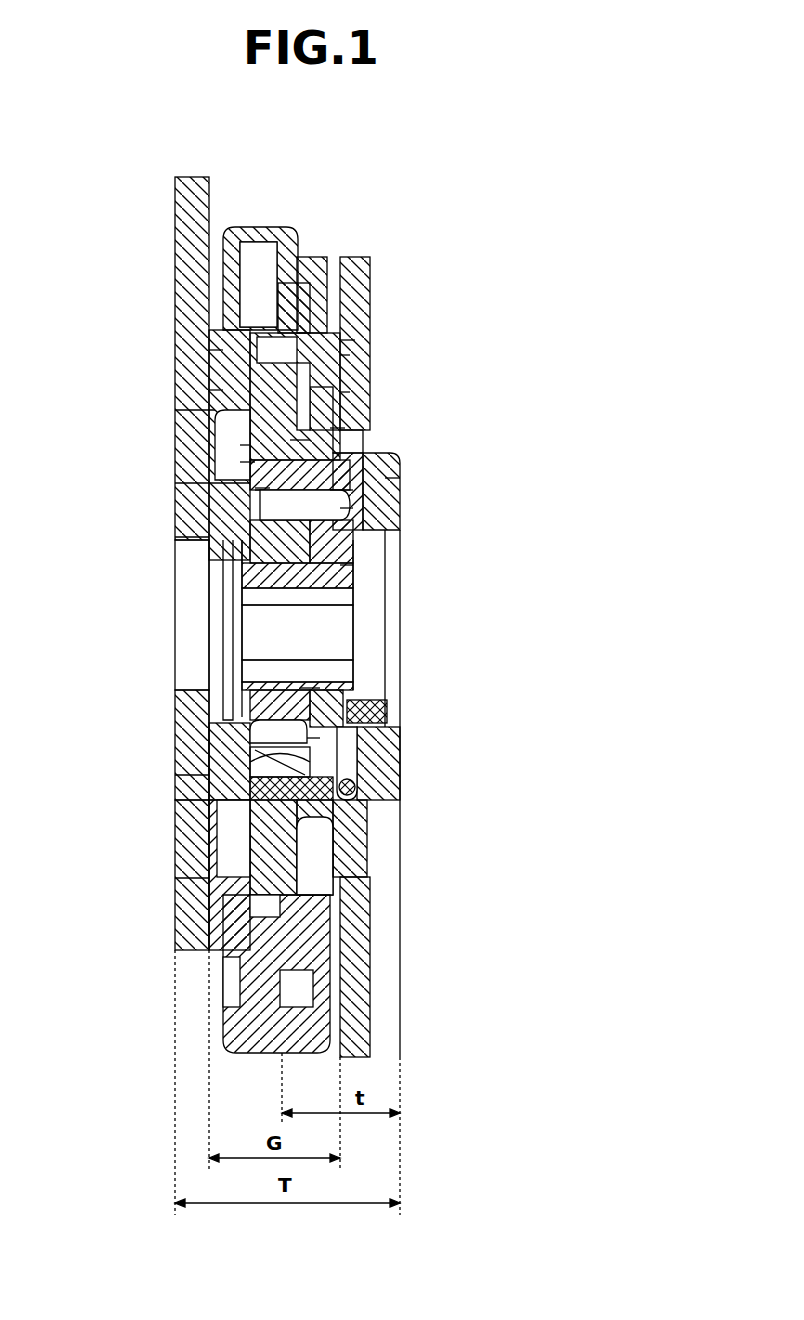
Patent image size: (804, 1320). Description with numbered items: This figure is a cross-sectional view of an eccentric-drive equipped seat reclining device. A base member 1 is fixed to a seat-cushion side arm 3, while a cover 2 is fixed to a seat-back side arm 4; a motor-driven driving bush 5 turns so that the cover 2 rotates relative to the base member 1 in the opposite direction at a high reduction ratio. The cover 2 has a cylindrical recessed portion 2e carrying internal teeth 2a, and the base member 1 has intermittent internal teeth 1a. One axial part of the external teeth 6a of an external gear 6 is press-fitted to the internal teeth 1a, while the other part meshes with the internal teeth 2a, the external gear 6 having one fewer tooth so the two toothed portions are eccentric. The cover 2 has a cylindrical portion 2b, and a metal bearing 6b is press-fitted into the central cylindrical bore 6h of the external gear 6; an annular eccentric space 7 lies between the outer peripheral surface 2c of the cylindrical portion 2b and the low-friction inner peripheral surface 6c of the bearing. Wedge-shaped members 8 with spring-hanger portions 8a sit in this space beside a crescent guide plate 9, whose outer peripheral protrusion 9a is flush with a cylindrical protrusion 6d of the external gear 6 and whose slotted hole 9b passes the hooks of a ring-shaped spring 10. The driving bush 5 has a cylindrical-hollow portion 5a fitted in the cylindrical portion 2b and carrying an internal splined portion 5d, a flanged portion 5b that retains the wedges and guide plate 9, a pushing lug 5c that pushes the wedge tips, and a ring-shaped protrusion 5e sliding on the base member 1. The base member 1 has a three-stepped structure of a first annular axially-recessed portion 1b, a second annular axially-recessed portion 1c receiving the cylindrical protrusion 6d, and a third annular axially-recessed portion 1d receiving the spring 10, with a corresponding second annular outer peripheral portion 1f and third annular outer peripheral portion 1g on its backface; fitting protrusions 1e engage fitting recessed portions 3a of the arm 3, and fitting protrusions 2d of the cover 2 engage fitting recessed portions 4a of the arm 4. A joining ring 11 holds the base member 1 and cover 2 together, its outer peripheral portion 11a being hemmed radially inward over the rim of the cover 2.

The base member 1 is at (305, 262).
The internal teeth 1a is at (350, 340).
The first annular axially-recessed portion 1b is at (397, 353).
The second annular axially-recessed portion 1c is at (350, 418).
The third annular axially-recessed portion 1d is at (405, 453).
The fitting protrusions 1e is at (345, 392).
The second annular outer peripheral portion 1f is at (340, 428).
The third annular outer peripheral portion 1g is at (400, 478).
The cover 2 is at (262, 240).
The internal teeth 2a is at (222, 325).
The cylindrical portion 2b is at (340, 550).
The outer peripheral surface 2c is at (250, 555).
The fitting protrusions 2d is at (215, 825).
The recessed portion 2e is at (215, 390).
The seat-cushion side arm 3 is at (355, 262).
The fitting recessed portions 3a is at (372, 405).
The seat-back side arm 4 is at (195, 180).
The fitting recessed portions 4a is at (192, 865).
The driving bush 5 is at (458, 580).
The cylindrical-hollow portion 5a is at (303, 690).
The flanged portion 5b is at (340, 573).
The pushing lug 5c is at (305, 735).
The internal splined portion 5d is at (268, 600).
The ring-shaped protrusion 5e is at (387, 712).
The external gear 6 is at (240, 430).
The external teeth 6a is at (220, 350).
The metal bearing 6b is at (245, 462).
The inner peripheral surface 6c is at (265, 488).
The cylindrical protrusion 6d is at (300, 440).
The central cylindrical bore 6h is at (240, 445).
The eccentric space 7 is at (222, 778).
The wedge-shaped members 8 is at (270, 530).
The spring-hanger portions 8a is at (258, 500).
The guide plate 9 is at (300, 530).
The outer peripheral protrusion 9a is at (335, 490).
The slotted hole 9b is at (345, 506).
The ring-shaped spring 10 is at (400, 780).
The joining ring 11 is at (250, 1057).
The outer peripheral portion 11a is at (232, 1015).